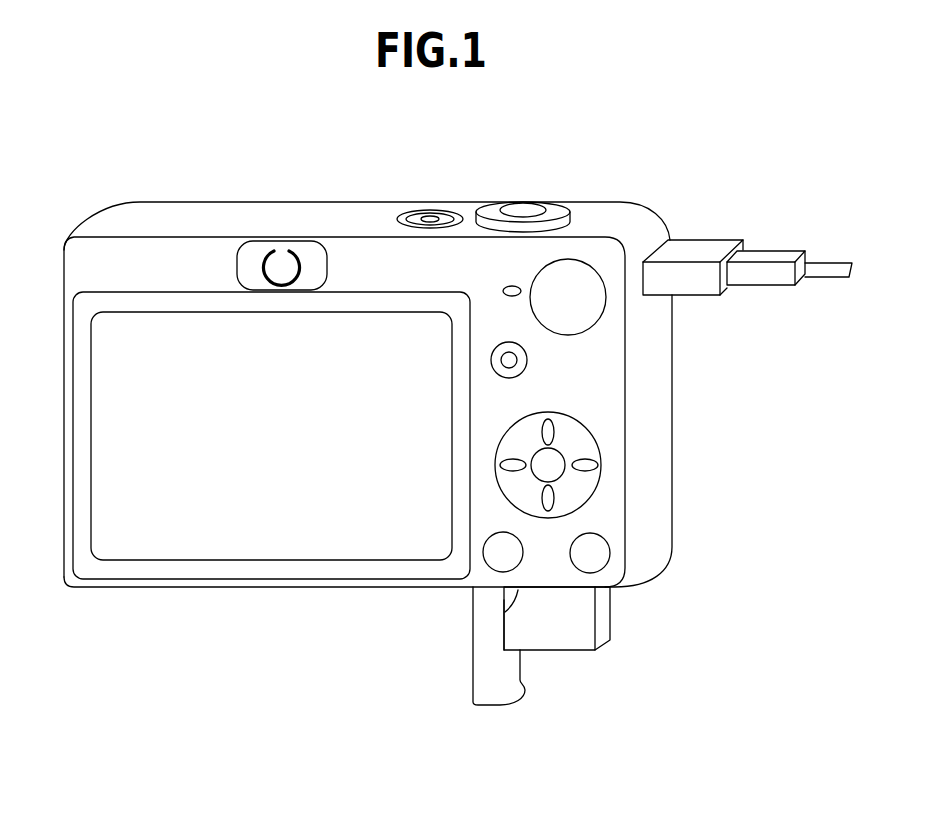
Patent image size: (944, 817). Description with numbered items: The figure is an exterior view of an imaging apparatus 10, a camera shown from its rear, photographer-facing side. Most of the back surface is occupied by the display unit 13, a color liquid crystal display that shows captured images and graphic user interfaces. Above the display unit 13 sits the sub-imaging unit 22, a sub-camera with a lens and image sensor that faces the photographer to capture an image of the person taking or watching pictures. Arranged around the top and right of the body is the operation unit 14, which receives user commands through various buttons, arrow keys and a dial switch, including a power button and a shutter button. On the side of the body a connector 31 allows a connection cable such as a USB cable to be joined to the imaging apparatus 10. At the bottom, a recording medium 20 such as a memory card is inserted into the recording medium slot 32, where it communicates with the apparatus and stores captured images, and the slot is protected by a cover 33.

The imaging apparatus 10 is at (238, 588).
The display unit 13 is at (172, 330).
The operation unit 14 is at (520, 212).
The recording medium 20 is at (587, 620).
The sub-imaging unit 22 is at (292, 246).
The connector 31 is at (672, 233).
The recording medium slot 32 is at (505, 617).
The cover 33 is at (473, 680).